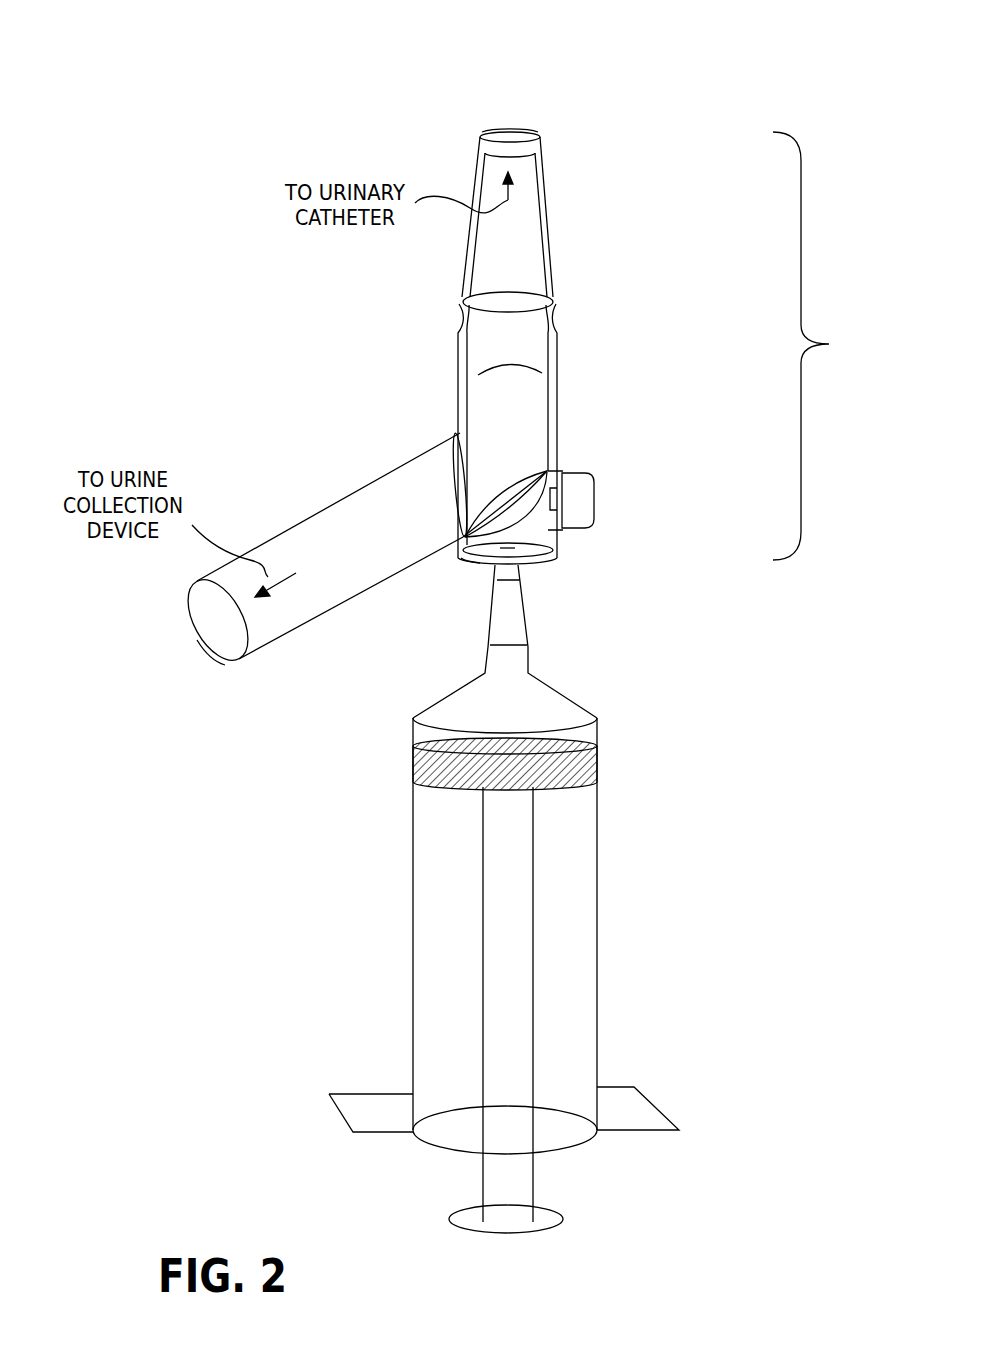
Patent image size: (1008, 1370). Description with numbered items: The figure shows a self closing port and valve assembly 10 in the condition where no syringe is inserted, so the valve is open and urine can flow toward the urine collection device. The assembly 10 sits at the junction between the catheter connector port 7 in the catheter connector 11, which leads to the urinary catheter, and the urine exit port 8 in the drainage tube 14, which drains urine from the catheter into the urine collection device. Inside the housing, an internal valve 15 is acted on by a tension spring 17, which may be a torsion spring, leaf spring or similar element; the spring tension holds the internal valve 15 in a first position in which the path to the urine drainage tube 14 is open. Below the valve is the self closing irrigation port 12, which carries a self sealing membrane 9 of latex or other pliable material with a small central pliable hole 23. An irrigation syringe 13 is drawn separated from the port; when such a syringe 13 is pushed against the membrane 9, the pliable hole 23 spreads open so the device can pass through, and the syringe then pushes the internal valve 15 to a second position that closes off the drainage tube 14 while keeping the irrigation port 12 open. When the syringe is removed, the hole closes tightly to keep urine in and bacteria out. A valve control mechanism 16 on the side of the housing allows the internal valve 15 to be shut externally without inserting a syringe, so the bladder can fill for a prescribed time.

The catheter connector port 7 is at (520, 132).
The urine exit port 8 is at (217, 625).
The self sealing membrane 9 is at (480, 557).
The self closing port and valve assembly 10 is at (819, 346).
The catheter connector 11 is at (522, 240).
The self closing irrigation port 12 is at (553, 562).
The irrigation syringe 13 is at (567, 881).
The drainage tube 14 is at (347, 520).
The internal valve 15 is at (520, 503).
The valve control mechanism 16 is at (578, 502).
The tension spring 17 is at (460, 530).
The pliable hole 23 is at (510, 557).